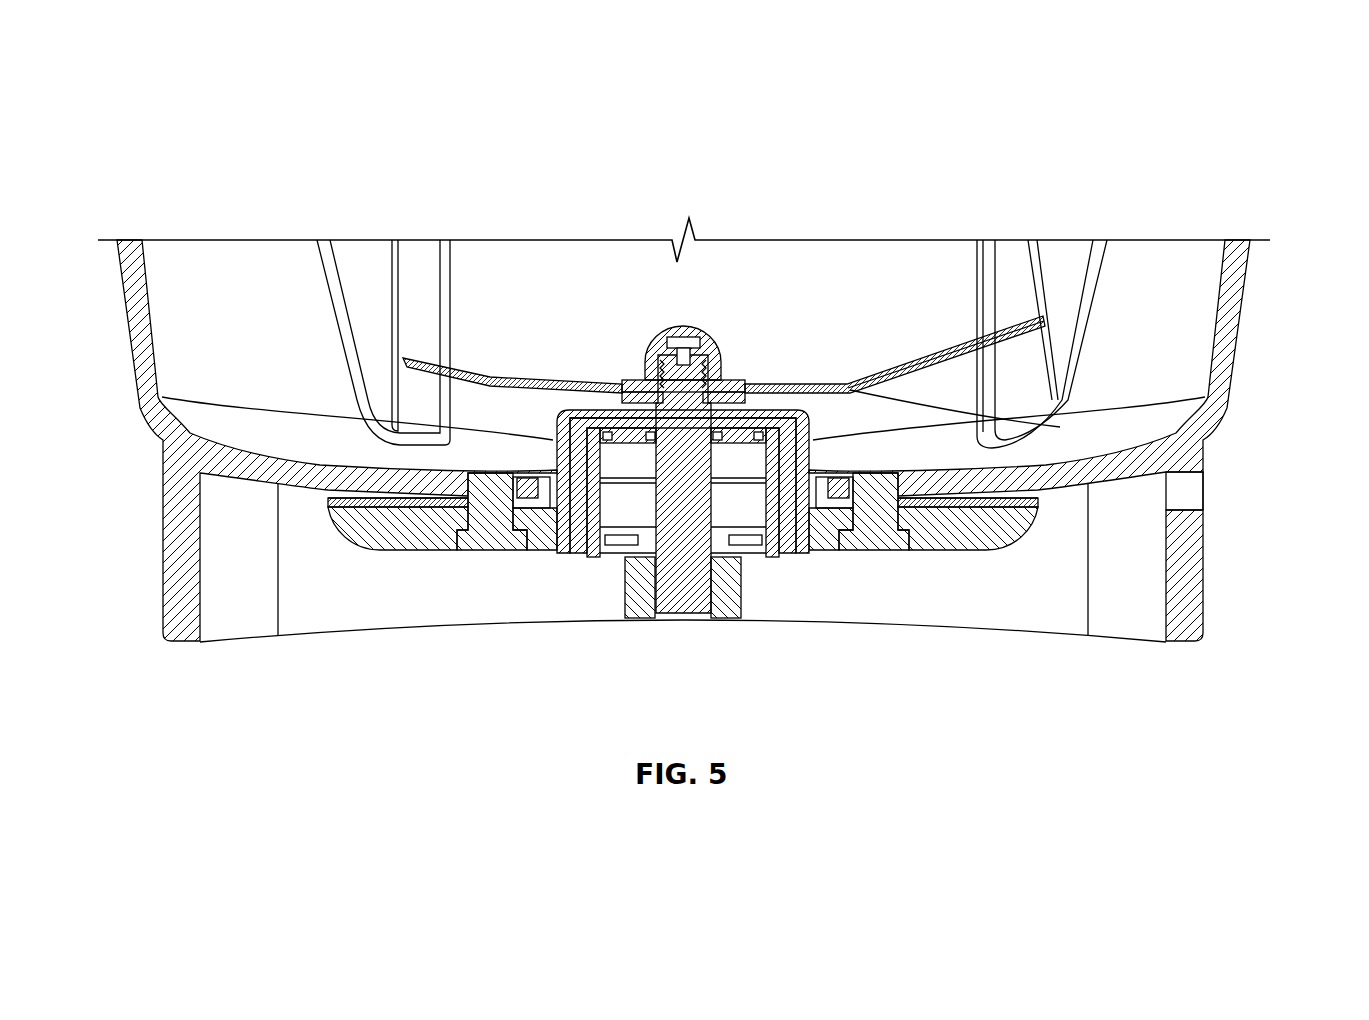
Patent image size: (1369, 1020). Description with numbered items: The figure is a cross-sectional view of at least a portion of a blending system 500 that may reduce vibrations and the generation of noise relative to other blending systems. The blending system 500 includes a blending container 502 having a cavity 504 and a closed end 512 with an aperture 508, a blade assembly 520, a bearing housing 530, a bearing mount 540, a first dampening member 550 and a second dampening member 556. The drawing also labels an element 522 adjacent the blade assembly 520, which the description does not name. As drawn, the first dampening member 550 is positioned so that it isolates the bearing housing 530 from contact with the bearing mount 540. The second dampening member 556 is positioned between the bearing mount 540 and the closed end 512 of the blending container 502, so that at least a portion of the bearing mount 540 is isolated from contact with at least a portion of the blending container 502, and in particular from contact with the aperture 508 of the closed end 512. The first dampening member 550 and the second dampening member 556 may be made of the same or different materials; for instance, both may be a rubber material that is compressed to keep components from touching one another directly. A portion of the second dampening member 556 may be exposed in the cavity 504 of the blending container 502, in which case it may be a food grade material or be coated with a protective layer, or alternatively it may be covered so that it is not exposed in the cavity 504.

The blending system 500 is at (162, 115).
The blending container 502 is at (1228, 318).
The cavity 504 is at (1060, 251).
The aperture 508 is at (555, 468).
The closed end 512 is at (1113, 463).
The blade assembly 520 is at (650, 318).
The retaining nut / flange 522 is at (715, 370).
The bearing housing 530 is at (590, 528).
The bearing mount 540 is at (345, 518).
The first dampening member 550 is at (788, 548).
The second dampening member 556 is at (1035, 501).